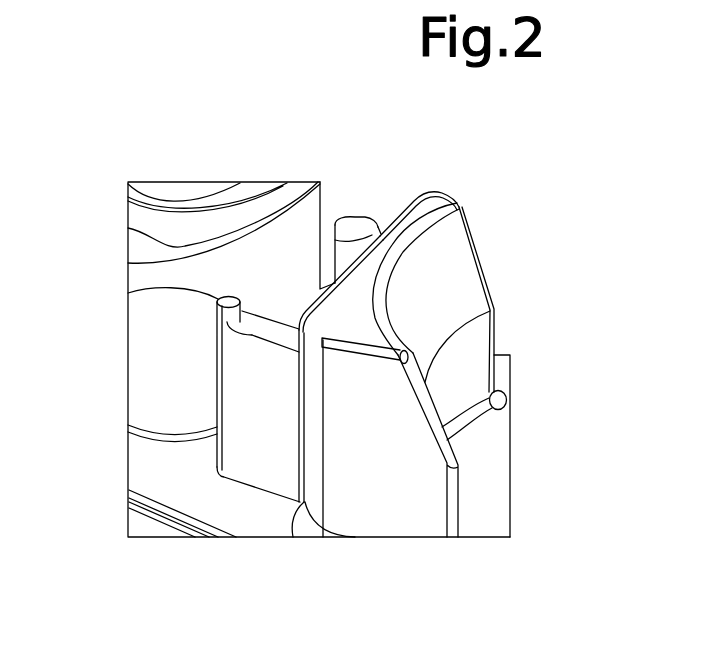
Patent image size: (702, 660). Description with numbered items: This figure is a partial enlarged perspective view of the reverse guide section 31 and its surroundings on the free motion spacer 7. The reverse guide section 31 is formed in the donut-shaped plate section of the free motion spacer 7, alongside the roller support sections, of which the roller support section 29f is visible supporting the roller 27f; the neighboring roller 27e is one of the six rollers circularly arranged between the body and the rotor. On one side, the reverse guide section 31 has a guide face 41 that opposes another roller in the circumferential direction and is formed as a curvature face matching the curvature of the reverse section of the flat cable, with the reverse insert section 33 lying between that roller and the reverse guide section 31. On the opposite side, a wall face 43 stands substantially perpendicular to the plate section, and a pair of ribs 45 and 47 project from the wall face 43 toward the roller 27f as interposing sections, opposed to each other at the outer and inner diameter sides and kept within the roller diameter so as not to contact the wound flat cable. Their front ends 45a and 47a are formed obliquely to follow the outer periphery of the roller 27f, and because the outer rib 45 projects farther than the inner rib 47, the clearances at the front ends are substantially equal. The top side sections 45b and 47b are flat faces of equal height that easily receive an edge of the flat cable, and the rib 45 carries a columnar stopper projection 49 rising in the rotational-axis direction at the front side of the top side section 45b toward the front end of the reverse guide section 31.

The free motion spacer 7 is at (263, 523).
The roller 27e is at (262, 245).
The roller 27f is at (128, 228).
The roller support section 29f is at (168, 187).
The reverse guide section 31 is at (368, 456).
The reverse insert section 33 is at (487, 452).
The guide face 41 is at (462, 358).
The wall face 43 is at (311, 300).
The rib 45 is at (240, 385).
The front end 45a is at (240, 297).
The top side section 45b is at (272, 341).
The rib 47 is at (361, 233).
The front end 47a is at (339, 218).
The top side section 47b is at (388, 198).
The projection 49 is at (128, 293).